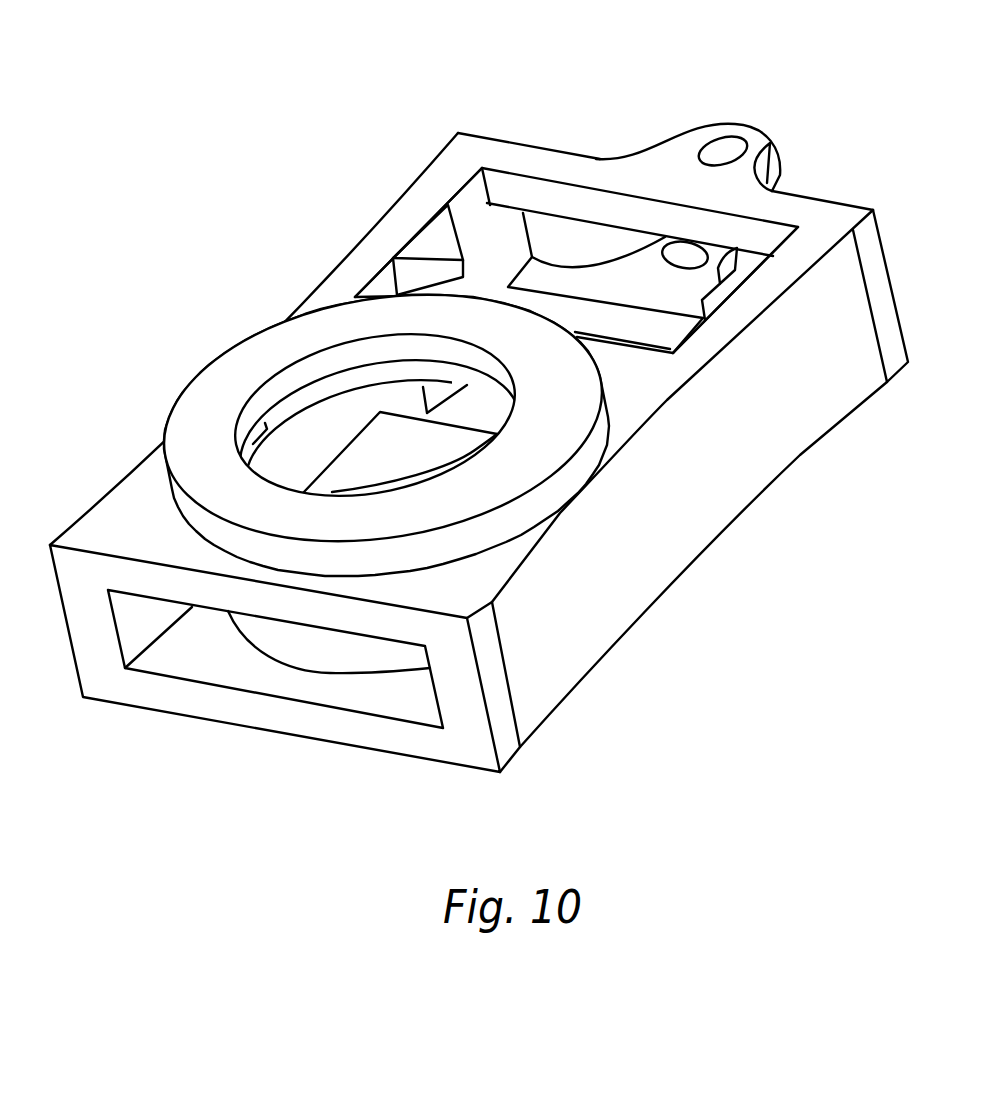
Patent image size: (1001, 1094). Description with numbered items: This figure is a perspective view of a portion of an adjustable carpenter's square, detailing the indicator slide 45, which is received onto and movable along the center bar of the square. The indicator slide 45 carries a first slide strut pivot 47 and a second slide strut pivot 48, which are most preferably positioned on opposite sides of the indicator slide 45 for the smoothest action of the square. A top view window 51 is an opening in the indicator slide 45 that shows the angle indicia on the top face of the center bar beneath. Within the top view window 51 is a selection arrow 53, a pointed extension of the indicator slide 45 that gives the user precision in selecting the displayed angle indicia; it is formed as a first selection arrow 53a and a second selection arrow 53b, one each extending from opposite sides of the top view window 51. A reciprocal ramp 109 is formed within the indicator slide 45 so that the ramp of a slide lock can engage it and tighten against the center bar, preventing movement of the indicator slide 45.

The top view window 51 is at (463, 112).
The first slide strut pivot 47 is at (718, 130).
The first selection arrow 53a is at (438, 238).
The selection arrow 53 is at (412, 250).
The reciprocal ramp 109 is at (290, 422).
The second slide strut pivot 48 is at (652, 258).
The second selection arrow 53b is at (715, 298).
The indicator slide 45 is at (123, 507).